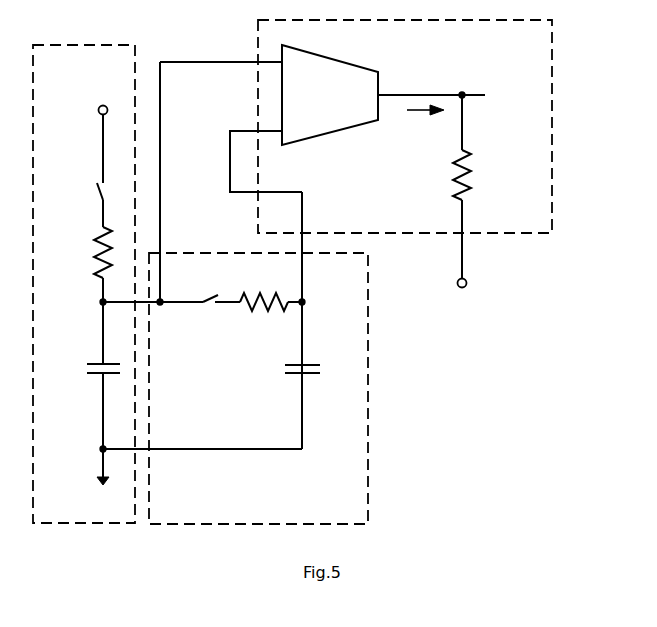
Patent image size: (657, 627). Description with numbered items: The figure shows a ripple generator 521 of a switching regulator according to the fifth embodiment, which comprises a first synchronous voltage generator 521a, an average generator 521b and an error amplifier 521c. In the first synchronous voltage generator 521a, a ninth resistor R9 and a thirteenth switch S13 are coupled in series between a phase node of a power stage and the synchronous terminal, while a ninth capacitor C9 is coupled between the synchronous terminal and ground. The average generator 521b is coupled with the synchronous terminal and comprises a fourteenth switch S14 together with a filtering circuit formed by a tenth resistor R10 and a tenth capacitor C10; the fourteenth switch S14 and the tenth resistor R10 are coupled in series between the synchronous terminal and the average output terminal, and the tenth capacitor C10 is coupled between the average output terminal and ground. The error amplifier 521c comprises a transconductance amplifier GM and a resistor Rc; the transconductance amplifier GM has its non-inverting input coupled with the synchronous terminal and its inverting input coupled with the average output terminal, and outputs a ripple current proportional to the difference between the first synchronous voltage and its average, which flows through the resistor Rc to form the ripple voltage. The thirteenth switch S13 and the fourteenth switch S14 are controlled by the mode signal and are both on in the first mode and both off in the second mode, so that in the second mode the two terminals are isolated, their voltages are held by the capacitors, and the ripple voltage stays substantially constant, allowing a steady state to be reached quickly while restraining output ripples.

The ripple generator 521 is at (467, 518).
The first synchronous voltage generator 521a is at (126, 518).
The average generator 521b is at (344, 518).
The error amplifier 521c is at (546, 233).
The thirteenth switch S13 is at (72, 195).
The ninth resistor R9 is at (80, 252).
The ninth capacitor C9 is at (84, 369).
The fourteenth switch S14 is at (208, 284).
The tenth resistor R10 is at (264, 289).
The tenth capacitor C10 is at (281, 371).
The transconductance amplifier GM is at (330, 95).
The resistor Rc is at (447, 175).